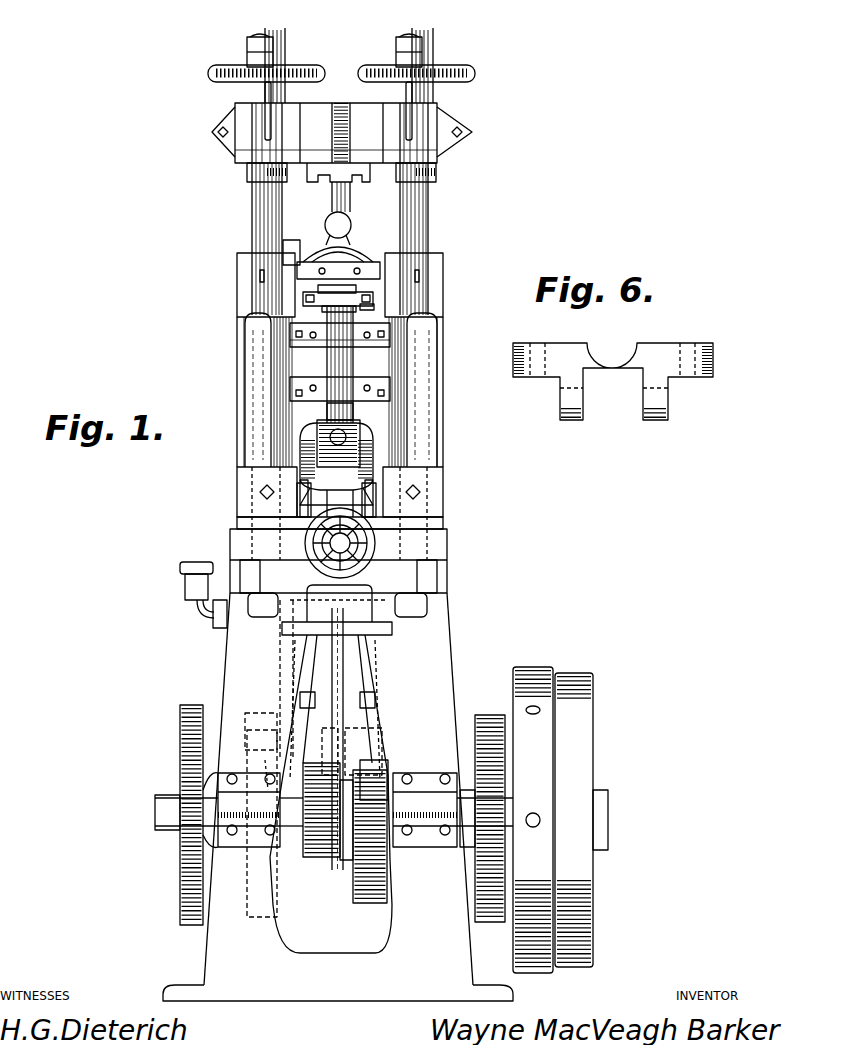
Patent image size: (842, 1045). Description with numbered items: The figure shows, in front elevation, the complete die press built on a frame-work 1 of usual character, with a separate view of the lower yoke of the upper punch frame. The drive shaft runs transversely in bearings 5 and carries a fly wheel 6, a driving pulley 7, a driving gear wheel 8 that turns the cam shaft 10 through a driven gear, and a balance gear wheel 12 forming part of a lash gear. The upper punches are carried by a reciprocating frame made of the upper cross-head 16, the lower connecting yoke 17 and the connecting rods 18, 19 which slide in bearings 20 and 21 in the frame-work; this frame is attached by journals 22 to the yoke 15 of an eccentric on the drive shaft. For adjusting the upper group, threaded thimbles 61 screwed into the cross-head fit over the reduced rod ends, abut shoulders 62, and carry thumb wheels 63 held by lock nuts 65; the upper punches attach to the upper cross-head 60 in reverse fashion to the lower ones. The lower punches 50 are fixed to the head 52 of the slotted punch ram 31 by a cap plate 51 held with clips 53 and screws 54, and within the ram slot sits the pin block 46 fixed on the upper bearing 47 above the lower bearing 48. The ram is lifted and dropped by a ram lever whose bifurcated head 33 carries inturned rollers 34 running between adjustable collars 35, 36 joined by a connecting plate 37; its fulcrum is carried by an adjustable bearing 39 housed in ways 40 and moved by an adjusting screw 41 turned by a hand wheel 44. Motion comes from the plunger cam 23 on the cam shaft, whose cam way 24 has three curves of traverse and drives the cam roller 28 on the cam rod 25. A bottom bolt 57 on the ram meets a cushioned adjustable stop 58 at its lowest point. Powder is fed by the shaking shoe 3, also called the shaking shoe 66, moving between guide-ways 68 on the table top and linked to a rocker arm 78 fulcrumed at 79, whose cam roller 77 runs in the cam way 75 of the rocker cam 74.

In FIG. 1, the frame-work 1 is at (328, 422).
In FIG. 1, the shaking shoe 3 is at (340, 96).
In FIG. 1, the bearings 5 is at (414, 800).
In FIG. 1, the fly wheel 6 is at (533, 820).
In FIG. 1, the driving pulley 7 is at (581, 820).
In FIG. 1, the driving gear wheel 8 is at (489, 718).
In FIG. 1, the cam shaft 10 is at (278, 28).
In FIG. 1, the balance gear wheel 12 is at (184, 748).
In FIG. 1, the yoke 15 is at (356, 682).
In FIG. 1, the upper cross-head 16 is at (342, 133).
In FIG. 1, the lower connecting yoke 17 is at (440, 574).
In FIG. 6, the lower connecting yoke 17 is at (613, 381).
In FIG. 1, the connecting rod 18 is at (252, 213).
In FIG. 1, the connecting rod 19 is at (428, 224).
In FIG. 1, the bearing 20 is at (240, 289).
In FIG. 1, the bearing 21 is at (444, 286).
In FIG. 1, the journals 22 is at (300, 636).
In FIG. 6, the journals 22 is at (571, 420).
In FIG. 1, the plunger cam 23 is at (384, 898).
In FIG. 1, the cam way 24 is at (387, 869).
In FIG. 1, the cam rod 25 is at (352, 724).
In FIG. 1, the cam roller 28 is at (372, 765).
In FIG. 1, the punch ram 31 is at (330, 366).
In FIG. 1, the bifurcated head 33 is at (370, 446).
In FIG. 1, the inturned rollers 34 is at (300, 441).
In FIG. 1, the adjustable collar 35 is at (330, 426).
In FIG. 1, the adjustable collar 36 is at (373, 456).
In FIG. 1, the connecting plate 37 is at (322, 411).
In FIG. 1, the adjustable bearing 39 is at (370, 514).
In FIG. 1, the ways 40 is at (262, 483).
In FIG. 1, the adjusting screw 41 is at (352, 573).
In FIG. 1, the hand wheel 44 is at (375, 541).
In FIG. 1, the pin block 46 is at (390, 335).
In FIG. 1, the upper bearing 47 is at (380, 343).
In FIG. 1, the lower bearing 48 is at (390, 389).
In FIG. 1, the lower punches 50 is at (345, 288).
In FIG. 1, the cap plate 51 is at (336, 308).
In FIG. 1, the head 52 is at (374, 306).
In FIG. 1, the clips 53 is at (372, 300).
In FIG. 1, the screws 54 is at (365, 296).
In FIG. 1, the bottom bolt 57 is at (373, 481).
In FIG. 1, the cushioned adjustable stop 58 is at (302, 483).
In FIG. 1, the upper cross-head 60 is at (347, 183).
In FIG. 1, the threaded thimbles 61 is at (263, 94).
In FIG. 1, the shoulders 62 is at (250, 181).
In FIG. 1, the thumb wheels 63 is at (212, 69).
In FIG. 1, the lock nuts 65 is at (248, 46).
In FIG. 1, the shaking shoe 66 is at (352, 242).
In FIG. 1, the guide-ways 68 is at (362, 263).
In FIG. 1, the rocker cam 74 is at (256, 918).
In FIG. 1, the cam way 75 is at (262, 728).
In FIG. 1, the cam roller 77 is at (266, 768).
In FIG. 1, the rocker arm 78 is at (283, 246).
In FIG. 1, the fulcrum 79 is at (214, 626).